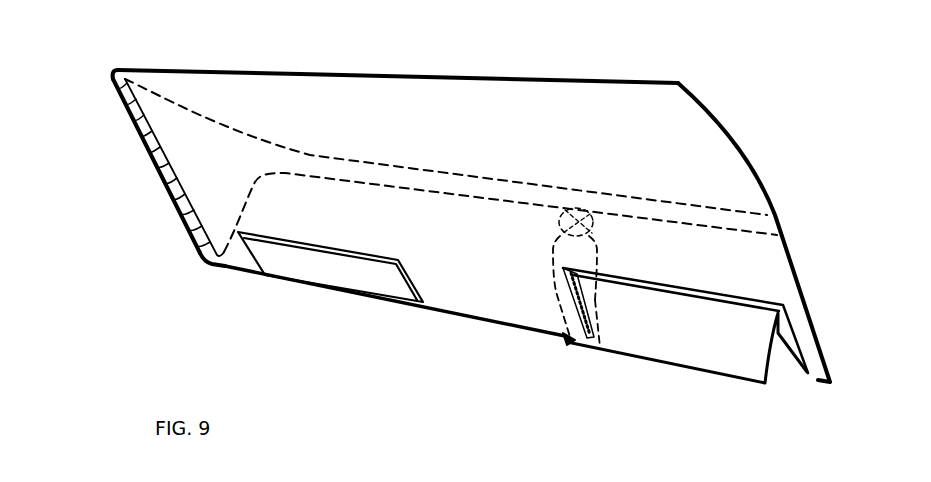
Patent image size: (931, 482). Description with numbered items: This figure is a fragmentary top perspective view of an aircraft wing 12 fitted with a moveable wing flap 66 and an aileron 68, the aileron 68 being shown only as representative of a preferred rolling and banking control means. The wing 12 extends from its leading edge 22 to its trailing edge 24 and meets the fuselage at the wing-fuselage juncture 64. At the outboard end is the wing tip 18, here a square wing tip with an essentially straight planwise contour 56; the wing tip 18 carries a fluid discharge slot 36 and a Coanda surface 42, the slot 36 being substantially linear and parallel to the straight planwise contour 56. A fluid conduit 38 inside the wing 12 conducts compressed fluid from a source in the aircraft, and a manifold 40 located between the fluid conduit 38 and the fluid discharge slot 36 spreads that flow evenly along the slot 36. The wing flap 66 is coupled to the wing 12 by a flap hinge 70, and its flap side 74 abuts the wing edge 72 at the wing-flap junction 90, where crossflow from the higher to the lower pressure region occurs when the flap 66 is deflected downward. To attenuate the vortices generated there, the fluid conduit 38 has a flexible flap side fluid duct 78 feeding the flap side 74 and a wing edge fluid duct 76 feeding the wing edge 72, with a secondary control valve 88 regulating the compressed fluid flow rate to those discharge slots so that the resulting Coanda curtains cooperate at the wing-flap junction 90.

The wing 12 is at (292, 72).
The trailing edge 24 is at (388, 76).
The manifold 40 is at (172, 115).
The Coanda surface 42 is at (122, 102).
The wing tip 18 is at (150, 157).
The fluid discharge slot 36 is at (182, 208).
The straight planwise contour 56 is at (200, 250).
The leading edge 22 is at (452, 315).
The fluid conduit 38 is at (622, 197).
The wing-fuselage juncture 64 is at (730, 133).
The aileron 68 is at (343, 295).
The flap side 74 is at (565, 343).
The wing flap 66 is at (753, 383).
The flap hinge 70 is at (680, 287).
The wing edge 72 is at (593, 303).
The secondary control valve 88 is at (559, 223).
The wing edge fluid duct 76 is at (557, 257).
The flap side fluid duct 78 is at (598, 252).
The wing-flap junction 90 is at (594, 328).